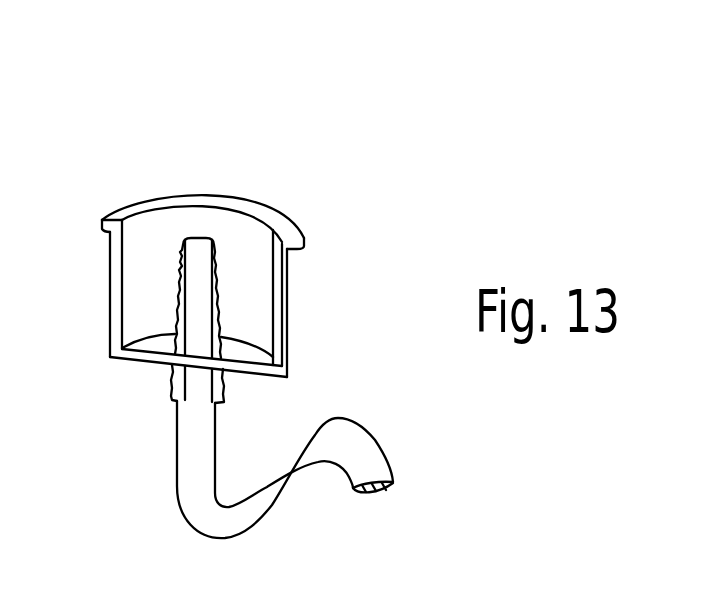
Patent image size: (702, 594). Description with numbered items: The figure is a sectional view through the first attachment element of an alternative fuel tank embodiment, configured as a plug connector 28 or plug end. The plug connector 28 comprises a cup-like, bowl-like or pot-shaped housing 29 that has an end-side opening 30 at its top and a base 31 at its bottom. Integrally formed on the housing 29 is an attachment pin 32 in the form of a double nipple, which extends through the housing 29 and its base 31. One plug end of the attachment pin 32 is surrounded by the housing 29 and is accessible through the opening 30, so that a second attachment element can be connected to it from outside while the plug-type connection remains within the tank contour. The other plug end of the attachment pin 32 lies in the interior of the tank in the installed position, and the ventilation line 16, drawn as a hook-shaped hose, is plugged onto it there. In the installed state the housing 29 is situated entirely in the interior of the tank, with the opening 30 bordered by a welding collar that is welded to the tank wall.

The ventilation line 16 is at (363, 433).
The plug connector 28 is at (224, 246).
The housing 29 is at (287, 290).
The end-side opening 30 is at (168, 218).
The base 31 is at (152, 356).
The attachment pin 32 is at (217, 262).